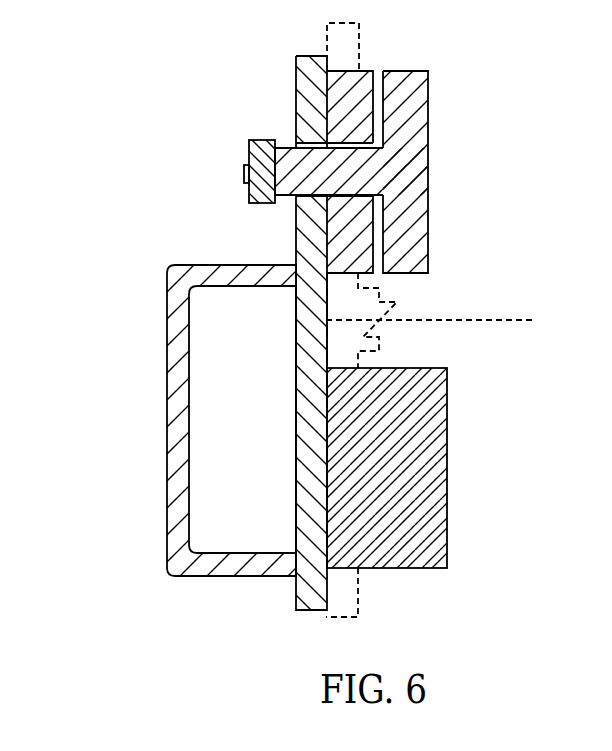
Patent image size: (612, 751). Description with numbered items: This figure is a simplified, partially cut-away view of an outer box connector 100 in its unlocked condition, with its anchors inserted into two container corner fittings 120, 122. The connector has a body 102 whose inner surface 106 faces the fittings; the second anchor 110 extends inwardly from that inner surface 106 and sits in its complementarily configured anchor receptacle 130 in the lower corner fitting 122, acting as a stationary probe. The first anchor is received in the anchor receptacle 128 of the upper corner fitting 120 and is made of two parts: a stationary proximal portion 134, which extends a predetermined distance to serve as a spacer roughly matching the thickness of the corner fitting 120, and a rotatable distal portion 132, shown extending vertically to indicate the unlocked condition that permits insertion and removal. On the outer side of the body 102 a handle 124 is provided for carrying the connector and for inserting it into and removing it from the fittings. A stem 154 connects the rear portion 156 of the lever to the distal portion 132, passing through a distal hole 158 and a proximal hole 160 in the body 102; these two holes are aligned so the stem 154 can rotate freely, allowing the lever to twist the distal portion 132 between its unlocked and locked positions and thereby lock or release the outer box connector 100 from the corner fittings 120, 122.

The outer box connector 100 is at (108, 521).
The body 102 is at (296, 313).
The inner surface 106 is at (322, 355).
The second anchor 110 is at (447, 500).
The corner fitting 120 is at (508, 310).
The corner fitting 122 is at (508, 357).
The handle 124 is at (167, 421).
The anchor receptacle 128 is at (327, 36).
The anchor receptacle 130 is at (358, 595).
The distal portion 132 is at (429, 130).
The proximal portion 134 is at (373, 178).
The stem 154 is at (284, 147).
The rear portion 156 is at (249, 146).
The distal hole 158 is at (358, 141).
The proximal hole 160 is at (300, 205).